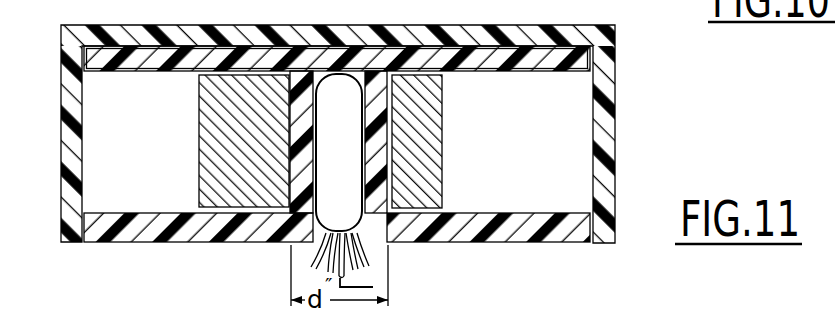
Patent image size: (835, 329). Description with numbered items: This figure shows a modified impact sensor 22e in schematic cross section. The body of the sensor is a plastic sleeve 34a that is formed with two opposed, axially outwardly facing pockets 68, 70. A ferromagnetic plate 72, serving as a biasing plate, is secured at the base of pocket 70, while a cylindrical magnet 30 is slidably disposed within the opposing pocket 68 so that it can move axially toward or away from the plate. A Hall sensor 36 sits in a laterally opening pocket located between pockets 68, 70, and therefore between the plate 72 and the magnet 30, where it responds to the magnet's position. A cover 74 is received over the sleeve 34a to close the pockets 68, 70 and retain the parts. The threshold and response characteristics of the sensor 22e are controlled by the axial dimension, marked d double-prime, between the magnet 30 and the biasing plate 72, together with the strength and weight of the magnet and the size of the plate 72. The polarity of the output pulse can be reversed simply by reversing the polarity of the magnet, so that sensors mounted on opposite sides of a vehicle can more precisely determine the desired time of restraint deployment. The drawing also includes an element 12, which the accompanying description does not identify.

The cable 12 is at (345, 82).
The sensor 22e is at (522, 24).
The cylindrical magnet 30 is at (206, 130).
The plastic sleeve 34a is at (148, 243).
The Hall sensor 36 is at (350, 73).
The pocket 68 is at (127, 73).
The pocket 70 is at (540, 73).
The ferromagnetic plate 72 is at (437, 145).
The cover 74 is at (608, 122).